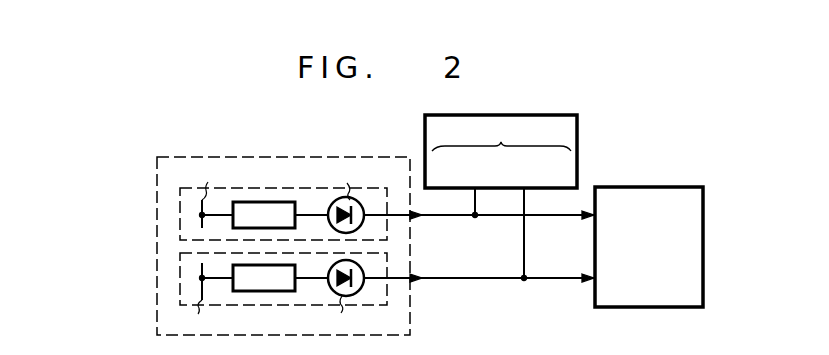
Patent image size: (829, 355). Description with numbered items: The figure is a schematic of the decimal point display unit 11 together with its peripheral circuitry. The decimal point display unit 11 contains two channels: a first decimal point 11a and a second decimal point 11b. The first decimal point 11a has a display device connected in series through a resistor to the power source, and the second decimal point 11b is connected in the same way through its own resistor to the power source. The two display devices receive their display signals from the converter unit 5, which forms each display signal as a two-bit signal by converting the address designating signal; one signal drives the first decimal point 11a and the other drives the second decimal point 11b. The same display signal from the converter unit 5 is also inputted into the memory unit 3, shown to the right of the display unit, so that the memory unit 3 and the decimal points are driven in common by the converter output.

The decimal point display unit 11 is at (205, 157).
The first decimal point 11a is at (180, 218).
The second decimal point 11b is at (180, 287).
The converter unit 5 is at (556, 122).
The memory unit 3 is at (676, 196).